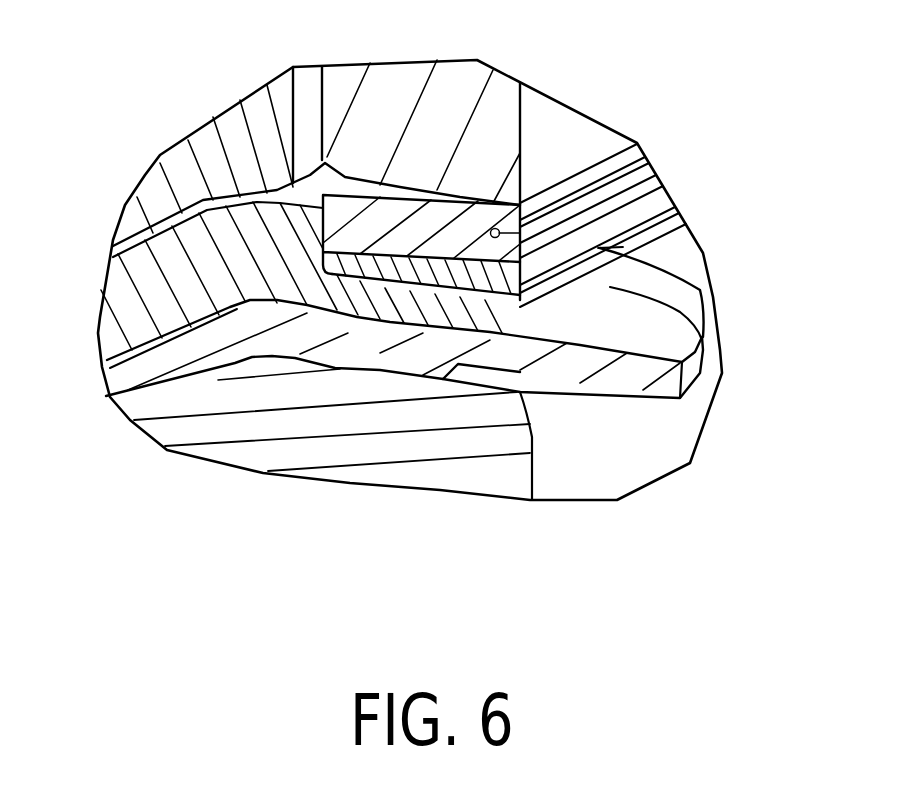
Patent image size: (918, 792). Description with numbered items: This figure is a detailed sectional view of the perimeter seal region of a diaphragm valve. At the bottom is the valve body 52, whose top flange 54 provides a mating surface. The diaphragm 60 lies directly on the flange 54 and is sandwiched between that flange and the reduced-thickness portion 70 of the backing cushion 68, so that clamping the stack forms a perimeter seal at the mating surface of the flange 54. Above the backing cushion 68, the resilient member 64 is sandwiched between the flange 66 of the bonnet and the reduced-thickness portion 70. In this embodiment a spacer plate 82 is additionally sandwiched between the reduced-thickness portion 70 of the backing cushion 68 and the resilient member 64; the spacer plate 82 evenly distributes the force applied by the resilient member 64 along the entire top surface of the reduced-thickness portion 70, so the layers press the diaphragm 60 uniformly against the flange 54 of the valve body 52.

The valve body 52 is at (297, 470).
The flange 54 is at (470, 467).
The diaphragm 60 is at (120, 383).
The resilient member 64 is at (600, 245).
The flange 66 is at (565, 128).
The backing cushion 68 is at (130, 298).
The reduced-thickness portion 70 is at (427, 305).
The spacer plate 82 is at (705, 288).